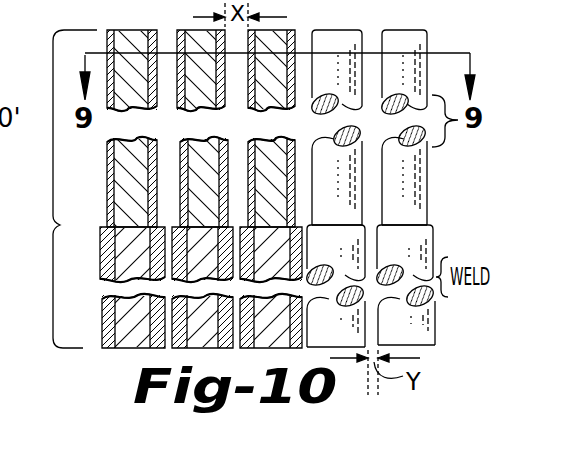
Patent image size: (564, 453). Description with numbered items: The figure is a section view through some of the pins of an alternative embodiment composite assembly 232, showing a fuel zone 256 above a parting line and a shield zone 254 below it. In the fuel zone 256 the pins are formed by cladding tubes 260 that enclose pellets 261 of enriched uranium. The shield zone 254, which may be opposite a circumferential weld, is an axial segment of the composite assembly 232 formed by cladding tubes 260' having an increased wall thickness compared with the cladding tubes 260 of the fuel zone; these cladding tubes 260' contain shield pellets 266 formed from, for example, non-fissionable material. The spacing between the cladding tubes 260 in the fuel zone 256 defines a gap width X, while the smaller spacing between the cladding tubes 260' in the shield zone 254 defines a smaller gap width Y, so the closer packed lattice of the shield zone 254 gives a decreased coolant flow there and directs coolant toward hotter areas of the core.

The composite assembly 232 is at (375, 17).
The cladding tubes 260 is at (402, 173).
The cladding tubes 260' is at (406, 255).
The pellets 261 is at (200, 188).
The shield pellets 266 is at (147, 348).
The fuel zone 256 is at (53, 116).
The shield zone 254 is at (53, 284).